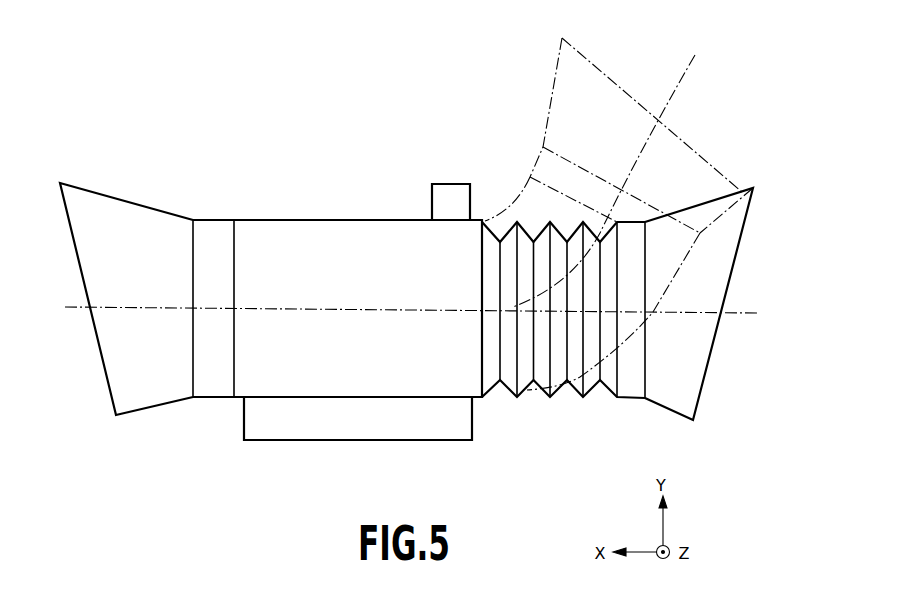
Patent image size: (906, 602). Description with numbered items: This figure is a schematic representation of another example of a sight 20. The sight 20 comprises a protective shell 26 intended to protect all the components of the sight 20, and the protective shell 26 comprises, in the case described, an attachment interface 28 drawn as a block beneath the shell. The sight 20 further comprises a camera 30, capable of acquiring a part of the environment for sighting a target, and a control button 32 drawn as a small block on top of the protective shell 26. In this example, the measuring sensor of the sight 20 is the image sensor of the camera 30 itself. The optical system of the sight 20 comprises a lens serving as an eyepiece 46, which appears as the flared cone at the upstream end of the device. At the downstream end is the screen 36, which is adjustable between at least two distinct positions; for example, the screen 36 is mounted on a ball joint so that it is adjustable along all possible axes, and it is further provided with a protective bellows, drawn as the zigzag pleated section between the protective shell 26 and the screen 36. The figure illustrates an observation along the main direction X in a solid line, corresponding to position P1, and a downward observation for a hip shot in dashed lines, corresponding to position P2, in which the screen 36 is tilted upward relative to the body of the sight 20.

The sight 20 is at (336, 200).
The protective shell 26 is at (400, 222).
The attachment interface 28 is at (358, 418).
The camera 30 is at (262, 222).
The control button 32 is at (453, 190).
The screen 36 is at (557, 383).
The eyepiece 46 is at (126, 299).
The position P1 is at (695, 392).
The position P2 is at (611, 89).